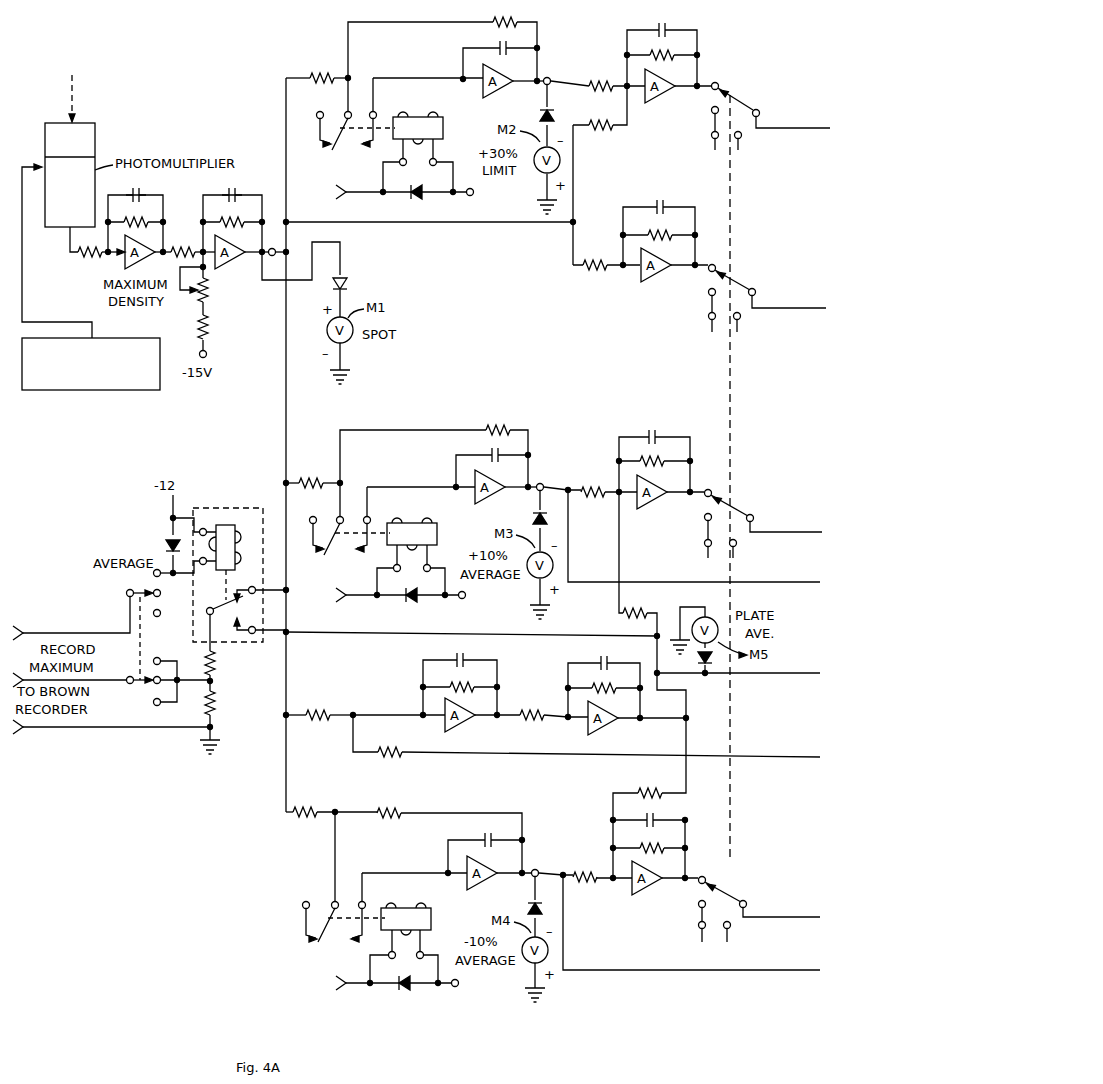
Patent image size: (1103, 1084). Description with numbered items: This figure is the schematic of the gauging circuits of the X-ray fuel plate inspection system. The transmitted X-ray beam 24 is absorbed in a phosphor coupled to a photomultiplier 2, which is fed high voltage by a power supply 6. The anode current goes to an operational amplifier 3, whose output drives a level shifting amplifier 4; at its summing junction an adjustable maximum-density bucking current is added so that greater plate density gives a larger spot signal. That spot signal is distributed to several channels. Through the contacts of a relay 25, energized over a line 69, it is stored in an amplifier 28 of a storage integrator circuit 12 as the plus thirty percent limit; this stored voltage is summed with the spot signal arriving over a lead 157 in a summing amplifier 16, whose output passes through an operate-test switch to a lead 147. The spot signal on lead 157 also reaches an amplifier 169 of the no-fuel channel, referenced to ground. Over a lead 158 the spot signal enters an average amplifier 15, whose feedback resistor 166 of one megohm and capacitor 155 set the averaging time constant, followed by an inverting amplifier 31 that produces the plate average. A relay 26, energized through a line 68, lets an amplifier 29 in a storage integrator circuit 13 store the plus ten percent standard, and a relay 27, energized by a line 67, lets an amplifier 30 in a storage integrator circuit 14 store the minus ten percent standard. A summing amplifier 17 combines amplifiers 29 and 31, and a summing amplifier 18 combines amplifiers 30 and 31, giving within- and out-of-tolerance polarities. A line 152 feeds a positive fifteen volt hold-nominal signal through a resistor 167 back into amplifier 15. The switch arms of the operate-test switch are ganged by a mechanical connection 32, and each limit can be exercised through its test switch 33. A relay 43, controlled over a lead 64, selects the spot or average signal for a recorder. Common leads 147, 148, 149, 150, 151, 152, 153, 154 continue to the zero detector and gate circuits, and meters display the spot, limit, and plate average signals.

The photomultiplier 2 is at (92, 140).
The amplifier 3 is at (158, 240).
The level shifting amplifier 4 is at (232, 262).
The power supply 6 is at (66, 390).
The storage integrator circuit 12 is at (420, 58).
The storage integrator circuit 13 is at (412, 465).
The storage integrator circuit 14 is at (408, 851).
The average amplifier 15 is at (455, 696).
The summing amplifier 16 is at (648, 80).
The summing amplifier 17 is at (640, 484).
The summing amplifier 18 is at (636, 868).
The beam 24 is at (72, 90).
The relay 25 is at (440, 126).
The relay 26 is at (434, 533).
The relay 27 is at (432, 920).
The amplifier 28 is at (496, 92).
The amplifier 29 is at (495, 497).
The amplifier 30 is at (476, 885).
The inverting amplifier 31 is at (600, 729).
The mechanical connection 32 is at (732, 220).
The test switch 33 is at (714, 127).
The relay 43 is at (226, 525).
The lead 64 is at (55, 633).
The line 67 is at (349, 986).
The line 68 is at (352, 598).
The line 69 is at (356, 194).
The lead 147 is at (813, 128).
The common lead 148 is at (811, 308).
The common lead 149 is at (808, 532).
The common lead 150 is at (677, 582).
The common lead 151 is at (805, 673).
The line 152 is at (801, 758).
The common lead 153 is at (804, 917).
The common lead 154 is at (792, 970).
The capacitor 155 is at (455, 658).
The lead 157 is at (410, 226).
The lead 158 is at (292, 713).
The resistor 166 is at (450, 686).
The resistor 167 is at (385, 761).
The amplifier 169 is at (641, 280).